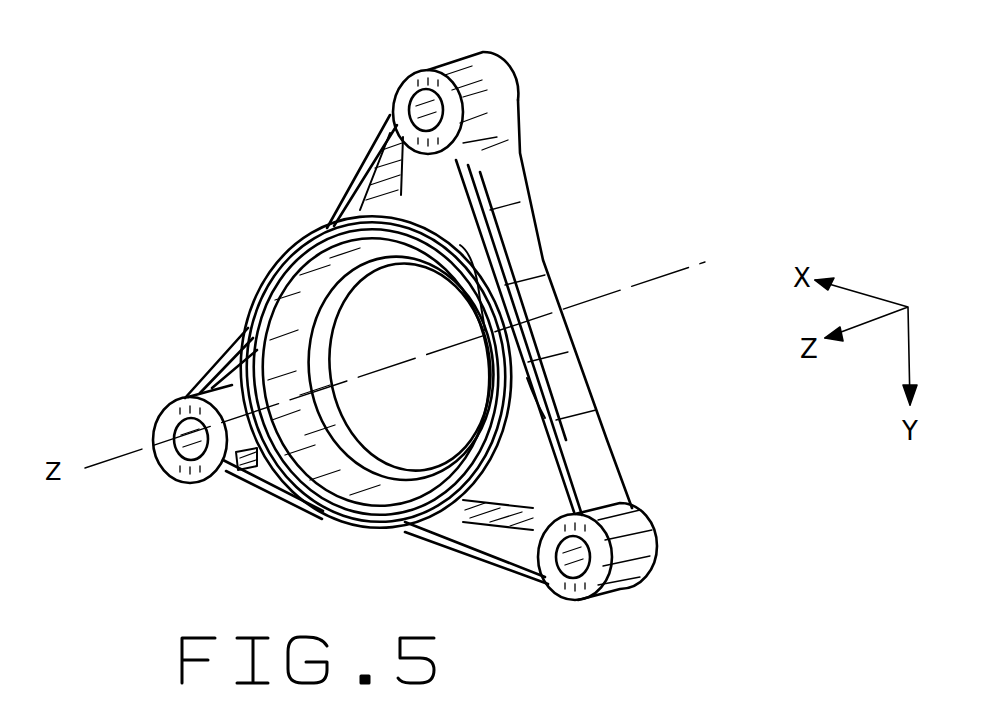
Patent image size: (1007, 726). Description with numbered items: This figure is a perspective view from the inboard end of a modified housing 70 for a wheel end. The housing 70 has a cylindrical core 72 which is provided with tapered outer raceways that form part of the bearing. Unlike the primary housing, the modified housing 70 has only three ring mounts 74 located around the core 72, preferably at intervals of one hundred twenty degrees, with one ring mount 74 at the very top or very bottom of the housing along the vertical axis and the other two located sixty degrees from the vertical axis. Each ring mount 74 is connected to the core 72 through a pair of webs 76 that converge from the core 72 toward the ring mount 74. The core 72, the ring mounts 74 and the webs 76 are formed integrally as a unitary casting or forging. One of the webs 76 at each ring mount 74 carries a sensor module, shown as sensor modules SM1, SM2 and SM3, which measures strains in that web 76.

The modified housing 70 is at (563, 217).
The cylindrical core 72 is at (277, 262).
The ring mount 74 is at (398, 93).
The web 76 is at (372, 143).
The sensor module SM1 is at (247, 452).
The sensor module SM2 is at (453, 537).
The sensor module SM3 is at (430, 183).